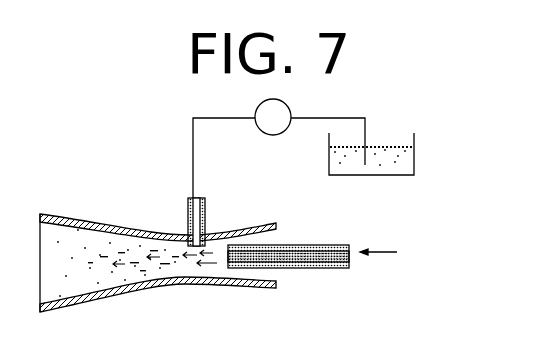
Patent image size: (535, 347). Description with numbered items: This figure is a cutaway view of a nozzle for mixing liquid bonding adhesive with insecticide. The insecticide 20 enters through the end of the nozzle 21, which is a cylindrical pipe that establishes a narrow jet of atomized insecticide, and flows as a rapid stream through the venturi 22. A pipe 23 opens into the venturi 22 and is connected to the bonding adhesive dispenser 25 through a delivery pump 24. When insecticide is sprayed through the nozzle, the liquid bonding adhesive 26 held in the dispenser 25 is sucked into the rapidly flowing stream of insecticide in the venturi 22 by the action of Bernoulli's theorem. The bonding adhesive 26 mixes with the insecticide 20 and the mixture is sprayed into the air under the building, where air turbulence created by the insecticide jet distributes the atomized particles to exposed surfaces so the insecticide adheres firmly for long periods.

The insecticide 20 is at (298, 245).
The end of the nozzle 21 is at (315, 269).
The venturi 22 is at (137, 290).
The liquid supply pipe 23 is at (205, 207).
The delivery pump 24 is at (268, 135).
The bonding adhesive dispenser 25 is at (420, 147).
The liquid bonding adhesive 26 is at (400, 168).